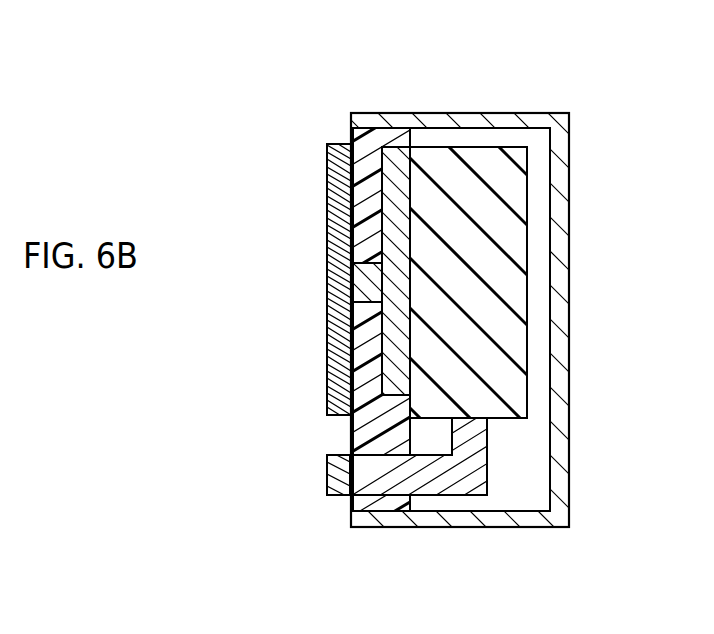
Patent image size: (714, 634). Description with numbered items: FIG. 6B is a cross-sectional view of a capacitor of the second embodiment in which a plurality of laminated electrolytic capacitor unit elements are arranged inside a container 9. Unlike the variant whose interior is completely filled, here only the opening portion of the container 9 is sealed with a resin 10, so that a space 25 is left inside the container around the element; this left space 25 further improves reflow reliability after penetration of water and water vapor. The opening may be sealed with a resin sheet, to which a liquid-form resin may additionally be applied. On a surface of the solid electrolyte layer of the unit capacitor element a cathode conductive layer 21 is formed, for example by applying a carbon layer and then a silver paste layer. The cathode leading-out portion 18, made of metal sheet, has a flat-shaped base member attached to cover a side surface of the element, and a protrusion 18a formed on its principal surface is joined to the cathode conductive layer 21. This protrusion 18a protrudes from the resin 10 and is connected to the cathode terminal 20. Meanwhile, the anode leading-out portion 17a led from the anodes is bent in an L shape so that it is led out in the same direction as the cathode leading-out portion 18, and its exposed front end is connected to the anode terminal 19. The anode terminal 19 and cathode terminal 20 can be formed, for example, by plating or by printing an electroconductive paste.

The container 9 is at (512, 113).
The resin 10 is at (325, 147).
The anode leading-out portion 17a is at (383, 477).
The cathode leading-out portion 18 is at (398, 167).
The protrusion 18a is at (370, 280).
The anode terminal 19 is at (327, 475).
The cathode terminal 20 is at (327, 352).
The cathode conductive layer 21 is at (507, 288).
The space 25 is at (537, 240).